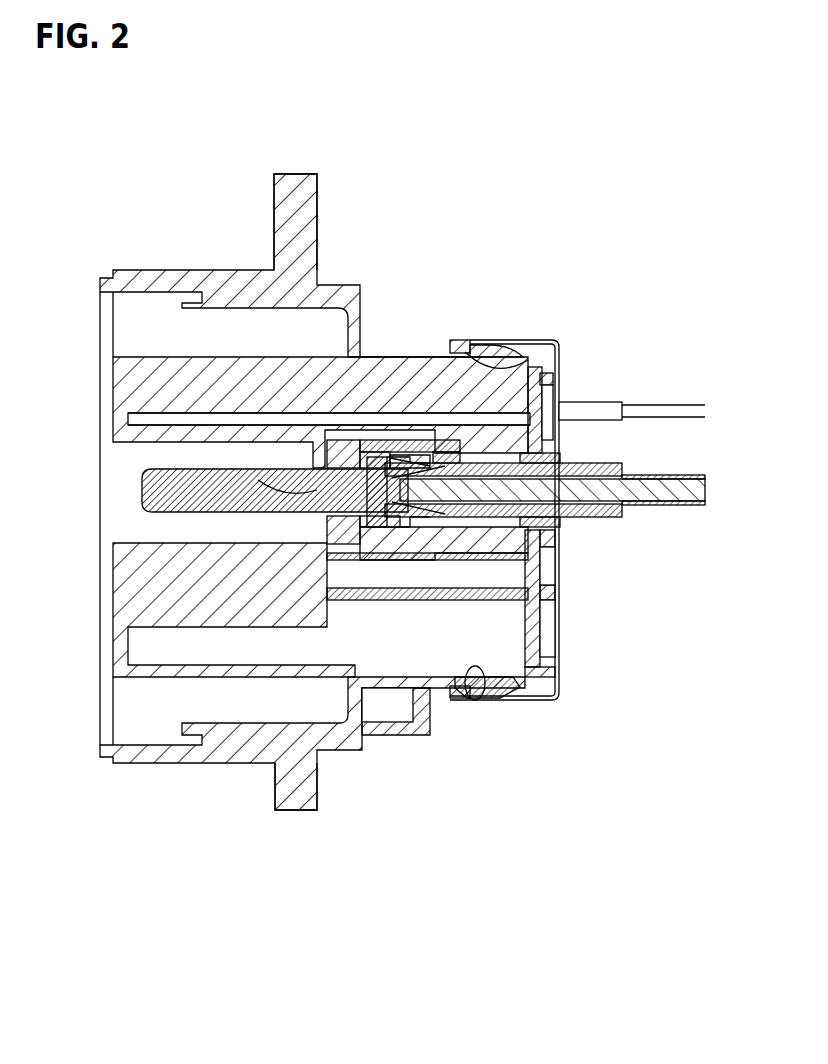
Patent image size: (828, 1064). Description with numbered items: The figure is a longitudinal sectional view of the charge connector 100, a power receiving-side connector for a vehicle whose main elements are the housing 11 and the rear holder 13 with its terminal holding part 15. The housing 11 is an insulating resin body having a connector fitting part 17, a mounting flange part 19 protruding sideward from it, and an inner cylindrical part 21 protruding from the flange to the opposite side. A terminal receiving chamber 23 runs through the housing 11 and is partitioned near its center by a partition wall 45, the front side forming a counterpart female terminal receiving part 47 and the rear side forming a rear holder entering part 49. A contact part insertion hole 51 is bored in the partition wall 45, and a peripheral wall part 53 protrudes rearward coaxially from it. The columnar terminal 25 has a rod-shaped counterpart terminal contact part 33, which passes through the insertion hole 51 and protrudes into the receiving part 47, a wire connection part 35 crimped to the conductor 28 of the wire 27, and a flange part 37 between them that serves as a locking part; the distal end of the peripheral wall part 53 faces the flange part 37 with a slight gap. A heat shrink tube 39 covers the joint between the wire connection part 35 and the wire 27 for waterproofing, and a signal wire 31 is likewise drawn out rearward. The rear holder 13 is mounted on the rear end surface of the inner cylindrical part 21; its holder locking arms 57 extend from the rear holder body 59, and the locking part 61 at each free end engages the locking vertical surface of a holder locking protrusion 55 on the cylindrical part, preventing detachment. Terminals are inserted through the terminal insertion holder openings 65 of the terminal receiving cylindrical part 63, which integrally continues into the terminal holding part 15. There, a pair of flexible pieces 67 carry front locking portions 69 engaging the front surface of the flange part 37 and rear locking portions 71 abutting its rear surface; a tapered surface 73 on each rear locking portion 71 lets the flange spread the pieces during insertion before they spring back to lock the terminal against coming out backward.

The charge connector 100 is at (178, 143).
The housing 11 is at (309, 163).
The rear holder 13 is at (566, 342).
The terminal holding part 15 is at (474, 795).
The connector fitting part 17 is at (135, 270).
The mounting flange part 19 is at (283, 173).
The inner cylindrical part 21 is at (440, 353).
The terminal receiving chamber 23 is at (112, 456).
The terminal 25 is at (138, 506).
The wire 27 is at (668, 521).
The conductor 28 is at (612, 520).
The wire 31 is at (677, 398).
The counterpart terminal contact part 33 is at (215, 507).
The wire connection part 35 is at (555, 592).
The flange part 37 is at (415, 440).
The heat shrink tube 39 is at (620, 470).
The partition wall 45 is at (335, 440).
The counterpart female terminal receiving part 47 is at (165, 462).
The rear holder entering part 49 is at (378, 455).
The contact part insertion hole 51 is at (258, 480).
The peripheral wall part 53 is at (362, 444).
The holder locking protrusion 55 is at (483, 337).
The holder locking arm 57 is at (520, 339).
The rear holder body 59 is at (555, 562).
The locking part 61 is at (530, 366).
The terminal receiving cylindrical part 63 is at (543, 400).
The terminal insertion holder opening 65 is at (558, 455).
The flexible piece 67 is at (404, 540).
The front locking portion 69 is at (352, 530).
The rear locking portion 71 is at (410, 540).
The tapered surface 73 is at (555, 650).